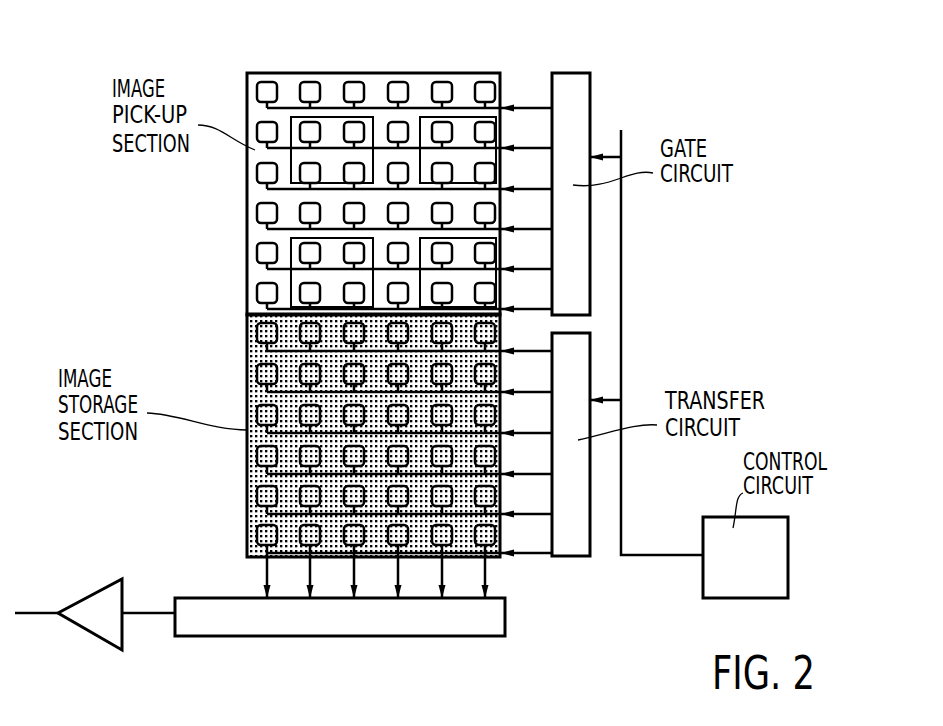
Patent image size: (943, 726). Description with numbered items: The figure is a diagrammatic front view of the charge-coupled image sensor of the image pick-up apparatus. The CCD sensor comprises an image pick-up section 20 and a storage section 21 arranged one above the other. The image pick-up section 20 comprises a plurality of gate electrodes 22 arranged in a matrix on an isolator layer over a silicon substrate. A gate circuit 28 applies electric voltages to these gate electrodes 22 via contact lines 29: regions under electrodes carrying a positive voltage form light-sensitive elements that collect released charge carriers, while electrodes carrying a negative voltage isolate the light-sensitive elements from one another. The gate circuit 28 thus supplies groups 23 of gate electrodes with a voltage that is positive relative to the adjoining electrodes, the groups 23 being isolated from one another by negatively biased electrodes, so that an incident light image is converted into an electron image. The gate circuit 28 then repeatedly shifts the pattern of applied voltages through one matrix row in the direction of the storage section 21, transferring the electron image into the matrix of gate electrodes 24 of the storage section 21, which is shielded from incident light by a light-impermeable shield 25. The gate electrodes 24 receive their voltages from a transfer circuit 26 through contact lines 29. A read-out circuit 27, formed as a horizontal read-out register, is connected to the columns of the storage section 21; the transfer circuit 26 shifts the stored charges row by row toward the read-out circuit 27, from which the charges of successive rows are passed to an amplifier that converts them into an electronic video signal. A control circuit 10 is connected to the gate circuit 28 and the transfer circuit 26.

The control circuit 10 is at (775, 538).
The image pick-up section 20 is at (248, 243).
The storage section 21 is at (247, 383).
The gate electrodes 22 is at (640, 316).
The groups of gate electrodes 23 is at (422, 117).
The gate electrodes of the storage section 24 is at (525, 588).
The light-impermeable shield 25 is at (247, 440).
The transfer circuit 26 is at (575, 547).
The read-out circuit 27 is at (490, 618).
The gate circuit 28 is at (575, 84).
The contact lines 29 is at (462, 104).